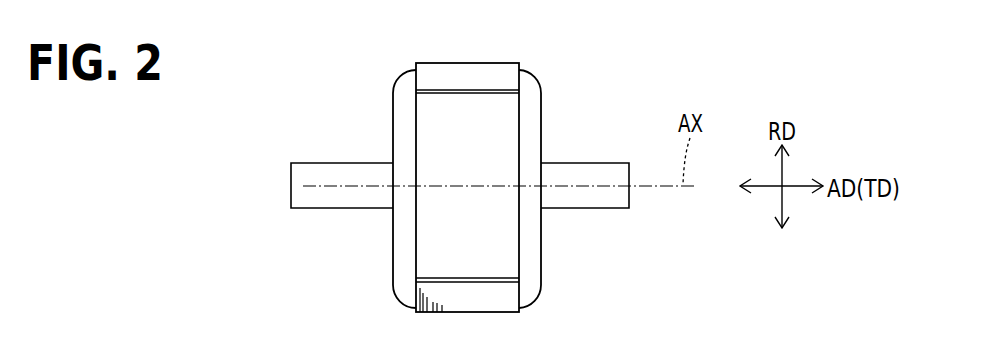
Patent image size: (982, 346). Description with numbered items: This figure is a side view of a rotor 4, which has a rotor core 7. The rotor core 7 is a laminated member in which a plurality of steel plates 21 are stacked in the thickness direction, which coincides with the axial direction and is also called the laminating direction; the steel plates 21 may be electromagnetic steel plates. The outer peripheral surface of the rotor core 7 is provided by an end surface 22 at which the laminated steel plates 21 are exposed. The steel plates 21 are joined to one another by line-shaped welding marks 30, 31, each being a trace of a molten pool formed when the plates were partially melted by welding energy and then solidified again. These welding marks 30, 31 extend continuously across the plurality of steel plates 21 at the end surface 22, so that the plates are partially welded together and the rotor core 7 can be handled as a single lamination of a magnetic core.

The rotor 4 is at (618, 112).
The rotor core 7 is at (417, 152).
The steel plate 21 is at (416, 308).
The end surface 22 is at (510, 251).
The welding mark 30 is at (497, 91).
The welding mark of the rotor core 31 is at (529, 158).